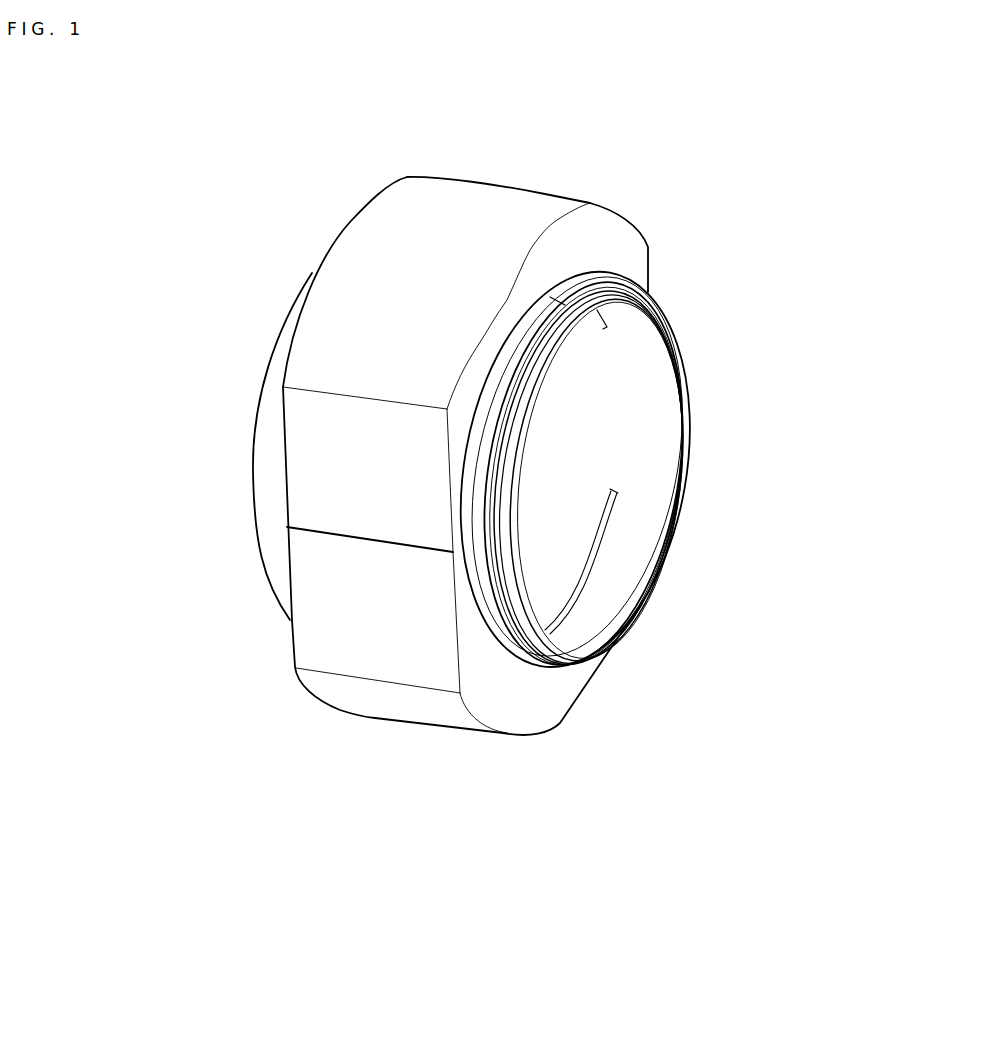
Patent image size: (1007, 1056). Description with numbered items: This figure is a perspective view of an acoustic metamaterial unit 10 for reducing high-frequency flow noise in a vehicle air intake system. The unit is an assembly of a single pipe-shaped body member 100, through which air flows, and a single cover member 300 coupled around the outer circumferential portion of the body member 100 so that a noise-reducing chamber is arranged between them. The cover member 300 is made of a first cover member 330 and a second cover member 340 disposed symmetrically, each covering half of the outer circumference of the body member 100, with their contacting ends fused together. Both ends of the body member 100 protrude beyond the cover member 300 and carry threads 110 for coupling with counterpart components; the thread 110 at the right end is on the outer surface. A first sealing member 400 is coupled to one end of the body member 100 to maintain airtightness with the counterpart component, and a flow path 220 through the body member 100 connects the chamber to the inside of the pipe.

The acoustic metamaterial unit 10 is at (657, 273).
The body member 100 is at (268, 502).
The thread 110 is at (522, 653).
The flow path 220 is at (590, 562).
The cover member 300 is at (405, 176).
The first cover member 330 is at (373, 248).
The second cover member 340 is at (380, 658).
The first sealing member 400 is at (573, 273).